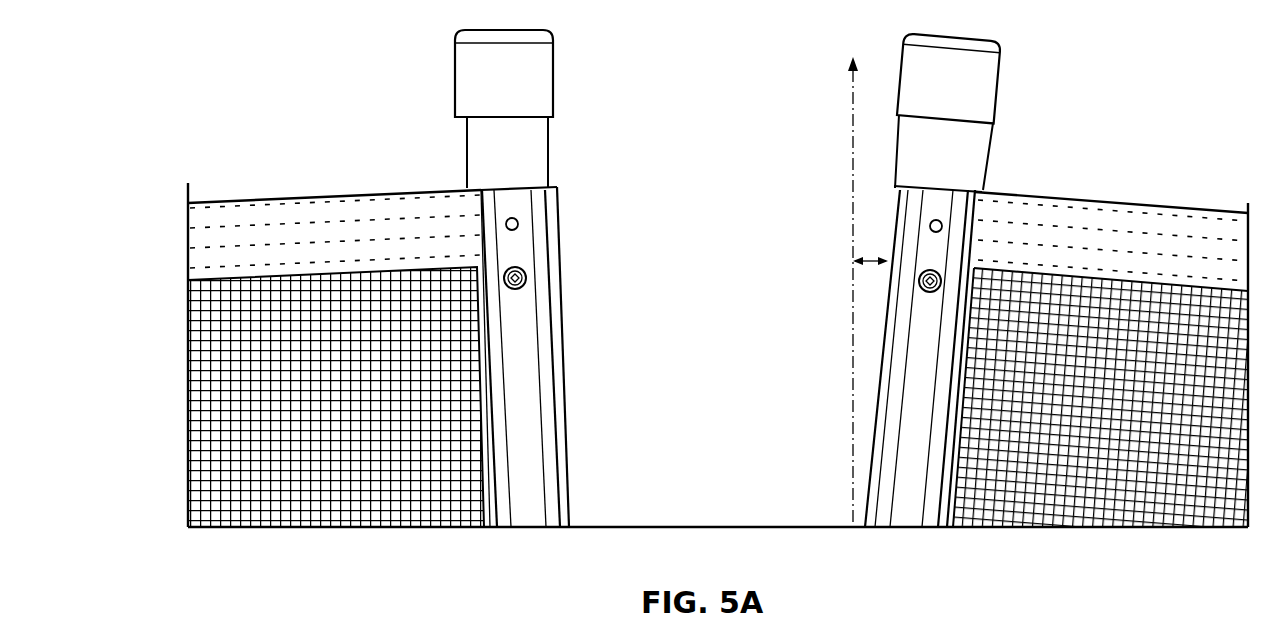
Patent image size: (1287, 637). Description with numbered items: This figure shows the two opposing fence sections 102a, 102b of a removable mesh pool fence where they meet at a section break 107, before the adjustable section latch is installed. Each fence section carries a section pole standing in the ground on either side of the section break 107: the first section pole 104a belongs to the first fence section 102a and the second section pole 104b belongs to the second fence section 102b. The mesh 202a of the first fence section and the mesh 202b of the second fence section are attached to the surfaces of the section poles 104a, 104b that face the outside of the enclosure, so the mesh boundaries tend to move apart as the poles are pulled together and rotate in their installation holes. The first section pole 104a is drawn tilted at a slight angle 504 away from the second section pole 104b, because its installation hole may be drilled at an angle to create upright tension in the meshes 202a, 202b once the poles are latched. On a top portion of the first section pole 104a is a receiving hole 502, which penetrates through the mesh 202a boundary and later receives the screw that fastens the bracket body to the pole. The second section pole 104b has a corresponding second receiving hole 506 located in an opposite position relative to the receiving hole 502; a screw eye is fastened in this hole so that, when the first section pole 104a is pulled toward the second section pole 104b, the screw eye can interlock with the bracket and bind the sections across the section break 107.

The first fence section 102a is at (1133, 360).
The second fence section 102b is at (315, 357).
The first section pole 104a is at (975, 142).
The second section pole 104b is at (468, 138).
The section break 107 is at (779, 512).
The mesh of first fence section 202a is at (897, 339).
The mesh of second fence section 202b is at (548, 340).
The receiving hole 502 is at (937, 219).
The angle 504 is at (870, 256).
The second receiving hole 506 is at (512, 216).